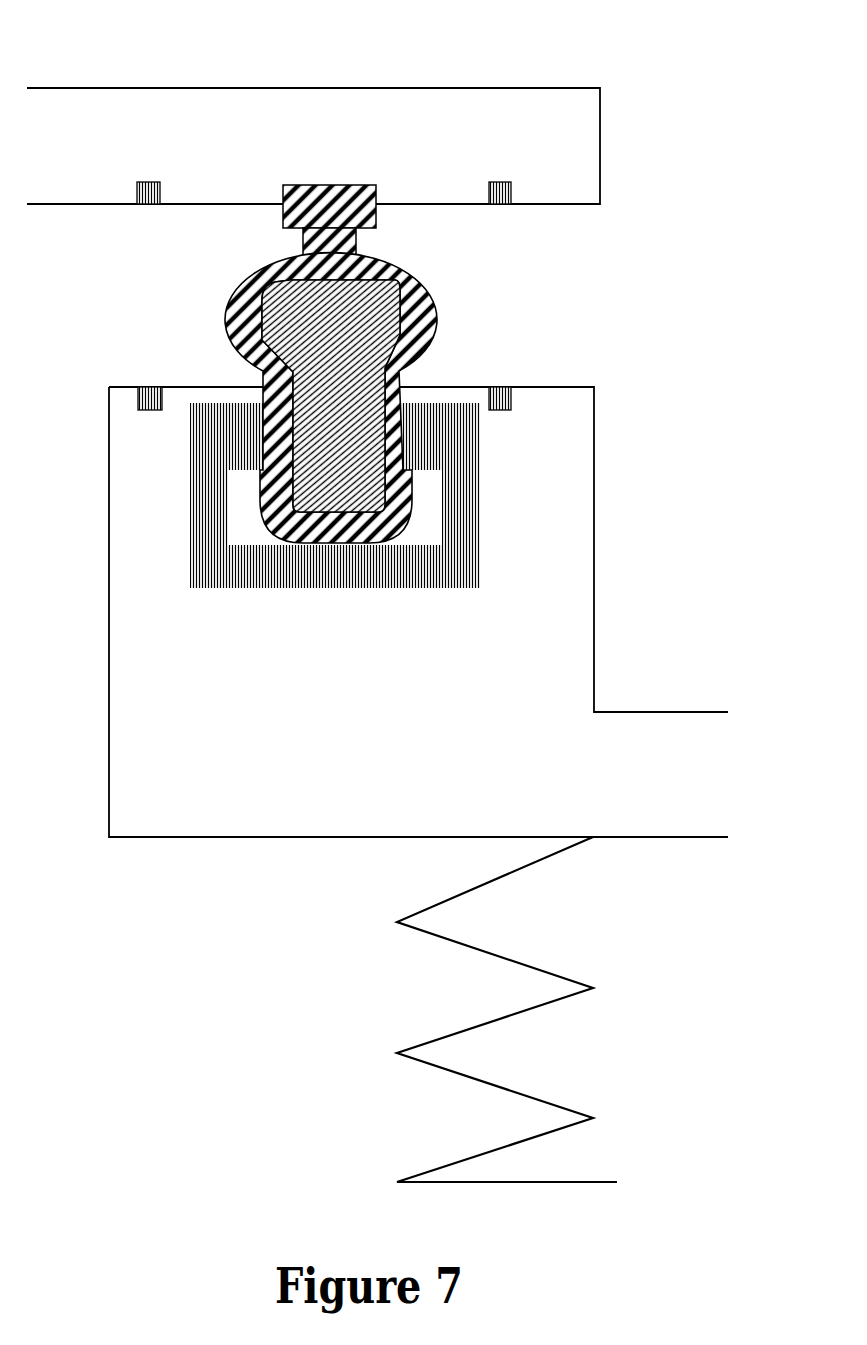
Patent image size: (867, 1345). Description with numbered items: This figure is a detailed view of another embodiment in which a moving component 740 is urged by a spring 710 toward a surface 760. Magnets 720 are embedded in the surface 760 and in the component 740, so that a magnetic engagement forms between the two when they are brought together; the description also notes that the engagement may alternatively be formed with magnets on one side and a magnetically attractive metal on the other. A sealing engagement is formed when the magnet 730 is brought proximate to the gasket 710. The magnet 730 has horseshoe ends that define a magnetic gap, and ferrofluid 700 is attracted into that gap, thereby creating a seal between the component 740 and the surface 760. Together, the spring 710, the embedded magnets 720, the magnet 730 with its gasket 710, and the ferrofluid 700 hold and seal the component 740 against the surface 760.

The ferrofluid 700 is at (300, 313).
The spring / gasket 710 is at (422, 290).
The magnets 720 is at (133, 210).
The magnet 730 is at (202, 435).
The moving component 740 is at (550, 615).
The surface 760 is at (205, 198).